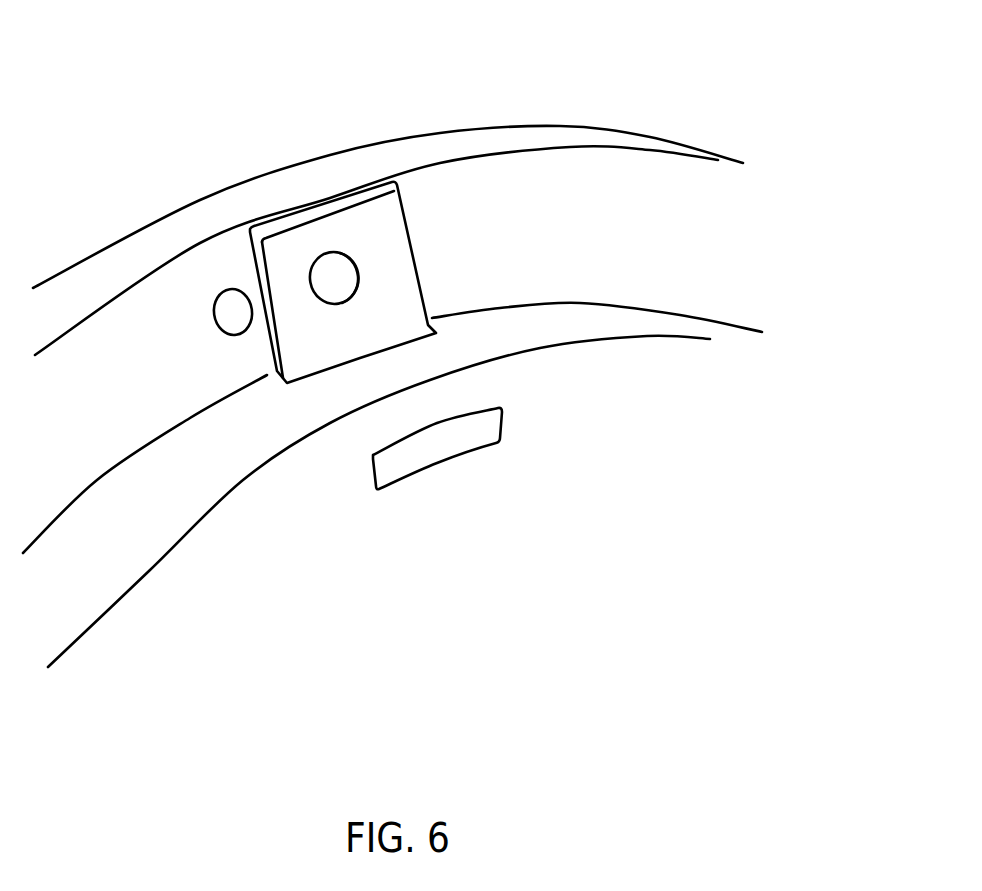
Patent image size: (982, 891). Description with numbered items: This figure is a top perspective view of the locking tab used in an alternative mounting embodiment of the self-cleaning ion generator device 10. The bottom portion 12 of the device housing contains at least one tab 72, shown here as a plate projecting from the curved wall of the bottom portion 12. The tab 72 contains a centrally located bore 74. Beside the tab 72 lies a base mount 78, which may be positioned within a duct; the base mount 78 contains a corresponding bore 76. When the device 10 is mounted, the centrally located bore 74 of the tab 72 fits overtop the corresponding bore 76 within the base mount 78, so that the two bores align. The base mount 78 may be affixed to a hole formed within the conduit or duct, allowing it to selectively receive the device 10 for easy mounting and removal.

The self-cleaning ion generator device 10 is at (230, 97).
The bottom portion 12 is at (398, 157).
The base mount 78 is at (530, 173).
The tab 72 is at (403, 305).
The centrally located bore 74 is at (347, 287).
The corresponding bore 76 is at (227, 315).